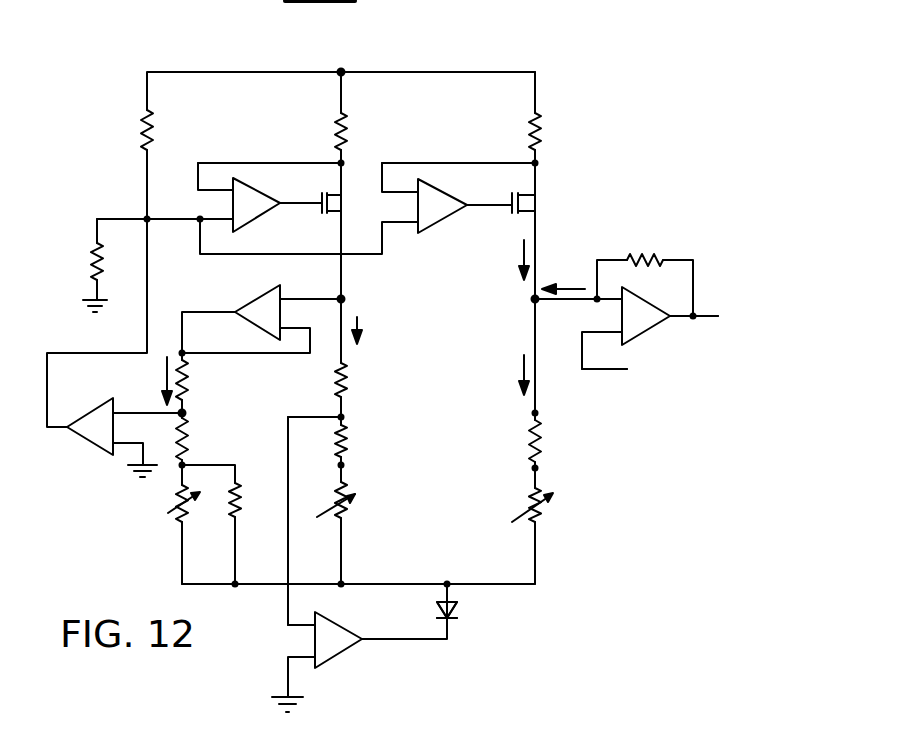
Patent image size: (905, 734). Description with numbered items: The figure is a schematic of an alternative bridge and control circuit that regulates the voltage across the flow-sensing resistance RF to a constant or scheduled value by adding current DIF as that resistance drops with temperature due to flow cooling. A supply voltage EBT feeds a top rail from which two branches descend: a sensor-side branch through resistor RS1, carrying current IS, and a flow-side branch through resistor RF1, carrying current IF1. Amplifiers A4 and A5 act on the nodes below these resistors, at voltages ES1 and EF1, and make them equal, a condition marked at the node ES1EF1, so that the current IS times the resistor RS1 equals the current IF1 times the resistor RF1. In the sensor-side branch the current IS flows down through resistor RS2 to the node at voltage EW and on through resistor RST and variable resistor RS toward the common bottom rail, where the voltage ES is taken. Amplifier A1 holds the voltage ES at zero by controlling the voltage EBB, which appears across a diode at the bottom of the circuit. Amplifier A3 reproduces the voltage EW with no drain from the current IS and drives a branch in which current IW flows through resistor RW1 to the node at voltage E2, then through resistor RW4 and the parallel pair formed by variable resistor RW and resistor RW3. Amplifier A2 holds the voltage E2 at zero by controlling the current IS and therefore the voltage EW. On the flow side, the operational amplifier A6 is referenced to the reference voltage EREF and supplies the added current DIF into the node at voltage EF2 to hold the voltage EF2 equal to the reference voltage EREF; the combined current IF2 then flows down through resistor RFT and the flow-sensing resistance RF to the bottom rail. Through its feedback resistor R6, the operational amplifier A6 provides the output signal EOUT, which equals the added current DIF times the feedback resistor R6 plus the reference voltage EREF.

The amplifier A1 is at (338, 640).
The amplifier A2 is at (90, 426).
The amplifier A3 is at (257, 312).
The amplifier A4 is at (256, 205).
The amplifier A5 is at (442, 206).
The operational amplifier A6 is at (646, 316).
The resistor R_S1 RS1 is at (364, 127).
The resistor R_F1 RF1 is at (558, 127).
The resistor R_S2 RS2 is at (347, 383).
The resistor R_ST RST is at (347, 443).
The variable resistor R_S RS is at (350, 508).
The resistor R_FT RFT is at (528, 440).
The flow-sensing resistance R_F RF is at (527, 503).
The resistor R_W1 RW1 is at (189, 378).
The resistor R_W4 RW4 is at (189, 453).
The variable resistor R_W RW is at (173, 500).
The resistor R_W3 RW3 is at (224, 517).
The feedback resistor R6 is at (636, 254).
The supply voltage E_BT EBT is at (343, 55).
The voltage E_S1 ES1 is at (269, 144).
The voltage E_F1 EF1 is at (458, 143).
The E_S1 = E_F1 node ES1EF1 is at (165, 208).
The voltage E_W EW is at (284, 293).
The voltage E_S ES is at (300, 507).
The voltage E_2 E2 is at (204, 422).
The voltage E_F2 EF2 is at (508, 300).
The output signal E_OUT EOUT is at (714, 294).
The reference voltage E_REF EREF is at (630, 372).
The voltage E_BB EBB is at (471, 614).
The current I_F1 IF1 is at (522, 248).
The current I_F2 IF2 is at (522, 363).
The added current ΔI_F DIF is at (566, 285).
The current I_S IS is at (360, 325).
The current I_W IW is at (162, 377).